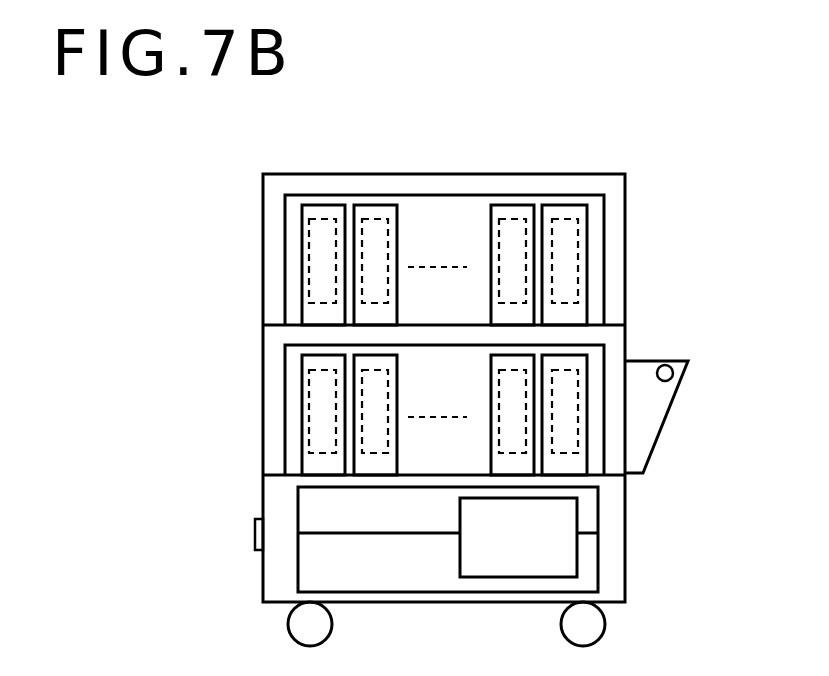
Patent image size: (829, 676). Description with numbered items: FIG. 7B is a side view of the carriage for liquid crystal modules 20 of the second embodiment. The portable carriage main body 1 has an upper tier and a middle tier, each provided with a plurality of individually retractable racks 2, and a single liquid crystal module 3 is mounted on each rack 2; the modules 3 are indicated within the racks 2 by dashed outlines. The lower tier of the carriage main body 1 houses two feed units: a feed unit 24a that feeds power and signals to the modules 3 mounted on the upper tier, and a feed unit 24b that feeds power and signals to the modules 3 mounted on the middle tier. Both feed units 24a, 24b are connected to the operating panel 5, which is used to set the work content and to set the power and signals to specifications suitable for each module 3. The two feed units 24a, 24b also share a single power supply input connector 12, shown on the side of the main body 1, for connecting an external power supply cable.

The carriage for liquid crystal modules 20 is at (665, 171).
The carriage main body 1 is at (590, 187).
The rack 2 is at (363, 218).
The module 3 is at (380, 218).
The operating panel 5 is at (559, 538).
The power supply input connector 12 is at (255, 534).
The feed unit 24a is at (588, 505).
The feed unit 24b is at (588, 573).